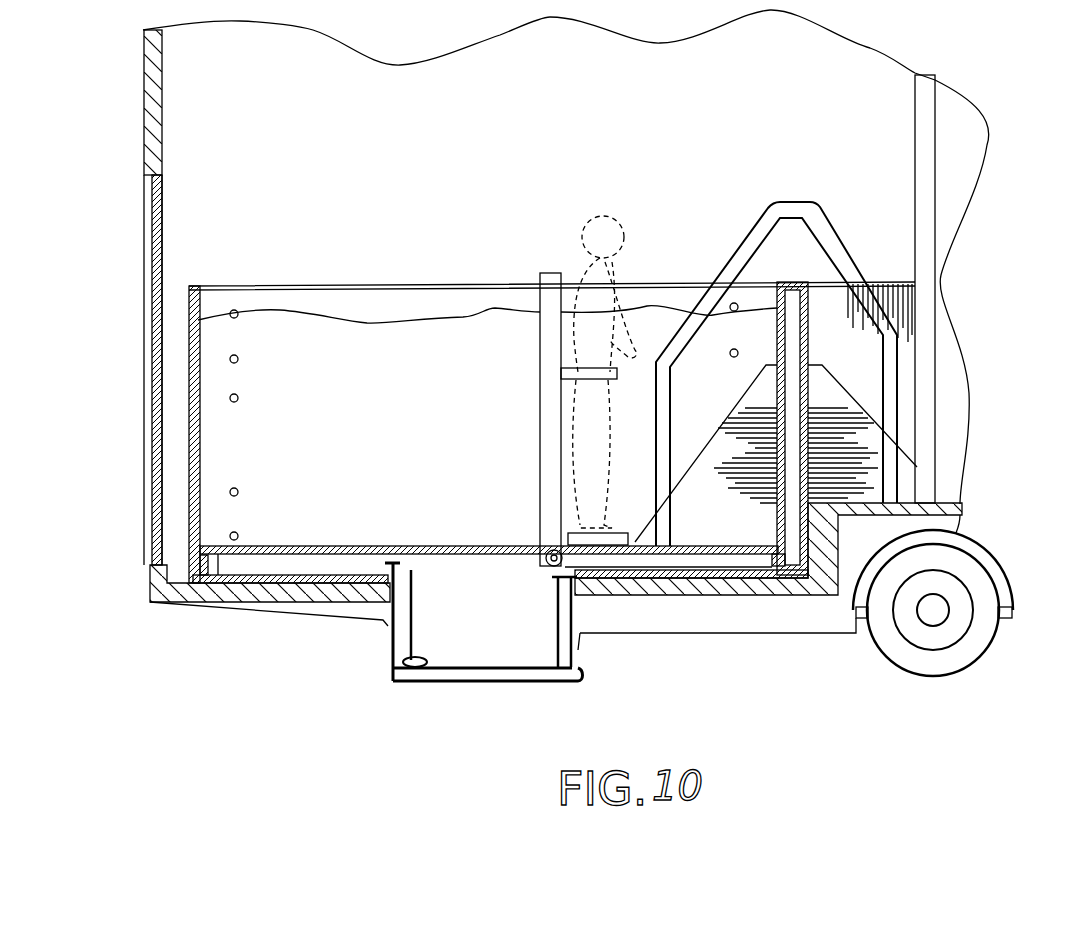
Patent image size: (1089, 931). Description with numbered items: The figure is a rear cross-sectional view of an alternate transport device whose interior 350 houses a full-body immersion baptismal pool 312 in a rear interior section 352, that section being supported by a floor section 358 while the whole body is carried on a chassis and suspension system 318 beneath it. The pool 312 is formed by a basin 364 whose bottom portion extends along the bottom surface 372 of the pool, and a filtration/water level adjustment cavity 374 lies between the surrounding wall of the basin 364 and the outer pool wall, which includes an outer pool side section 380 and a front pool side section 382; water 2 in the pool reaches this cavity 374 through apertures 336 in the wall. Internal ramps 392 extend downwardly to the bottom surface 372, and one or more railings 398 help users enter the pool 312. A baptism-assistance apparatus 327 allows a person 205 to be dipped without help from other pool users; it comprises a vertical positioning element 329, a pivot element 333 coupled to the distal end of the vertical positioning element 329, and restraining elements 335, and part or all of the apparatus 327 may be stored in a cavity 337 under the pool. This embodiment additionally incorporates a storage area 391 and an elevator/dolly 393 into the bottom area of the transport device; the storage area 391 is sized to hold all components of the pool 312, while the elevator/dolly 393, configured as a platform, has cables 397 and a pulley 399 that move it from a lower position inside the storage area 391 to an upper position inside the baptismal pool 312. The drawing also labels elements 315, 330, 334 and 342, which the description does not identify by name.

The water 2 is at (405, 318).
The person 205 is at (592, 207).
The full body immersion baptismal pool 312 is at (670, 267).
The truck body side wall 315 is at (226, 122).
The chassis and suspension system 318 is at (1007, 618).
The baptism-assistance apparatus 327 is at (535, 372).
The vertical positioning element 329 is at (537, 298).
The wheel 330 is at (905, 658).
The pivot element 333 is at (548, 556).
The wall liner 334 is at (155, 425).
The restraining elements 335 is at (583, 400).
The apertures 336 is at (230, 398).
The cavity 337 is at (427, 547).
The inner wall panel 342 is at (155, 291).
The interior 350 is at (440, 121).
The rear interior section 352 is at (795, 112).
The floor section 358 is at (670, 598).
The basin 364 is at (188, 491).
The bottom surface 372 is at (368, 547).
The filtration/water level adjustment cavity 374 is at (607, 562).
The outer pool side section 380 is at (218, 575).
The front pool side section 382 is at (807, 340).
The storage area 391 is at (484, 622).
The internal ramps 392 is at (723, 540).
The elevator/dolly 393 is at (397, 660).
The cables 397 is at (413, 622).
The railings 398 is at (722, 255).
The pulley 399 is at (388, 623).